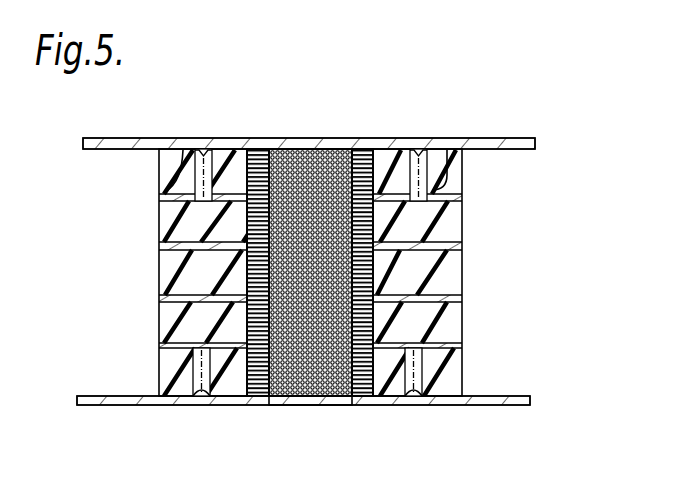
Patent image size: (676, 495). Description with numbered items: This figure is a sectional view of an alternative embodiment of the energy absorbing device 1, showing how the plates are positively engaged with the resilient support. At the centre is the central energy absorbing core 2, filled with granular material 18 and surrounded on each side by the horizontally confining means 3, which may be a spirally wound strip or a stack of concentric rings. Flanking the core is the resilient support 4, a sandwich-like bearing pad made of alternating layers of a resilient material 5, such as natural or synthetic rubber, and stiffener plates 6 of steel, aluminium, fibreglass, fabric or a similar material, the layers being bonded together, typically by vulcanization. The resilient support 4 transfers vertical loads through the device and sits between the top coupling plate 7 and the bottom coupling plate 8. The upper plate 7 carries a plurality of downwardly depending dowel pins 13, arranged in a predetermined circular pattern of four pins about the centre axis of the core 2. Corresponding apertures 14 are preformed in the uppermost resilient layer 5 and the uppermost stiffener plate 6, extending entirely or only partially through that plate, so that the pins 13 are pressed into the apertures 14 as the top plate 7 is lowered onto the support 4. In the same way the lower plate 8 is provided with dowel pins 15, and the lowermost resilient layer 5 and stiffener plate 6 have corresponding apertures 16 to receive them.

The laminated stack assembly 1 is at (444, 104).
The central energy absorbing core 2 is at (284, 149).
The horizontally confining means 3 is at (363, 149).
The resilient support 4 is at (468, 273).
The resilient material layer 5 is at (462, 190).
The stiffener plate 6 is at (165, 226).
The top coupling plate 7 is at (500, 138).
The bottom coupling plate 8 is at (505, 405).
The dowel pin 13 is at (176, 190).
The aperture 14 is at (183, 150).
The dowel pin 15 is at (192, 370).
The aperture 16 is at (188, 390).
The granular material 18 is at (305, 405).